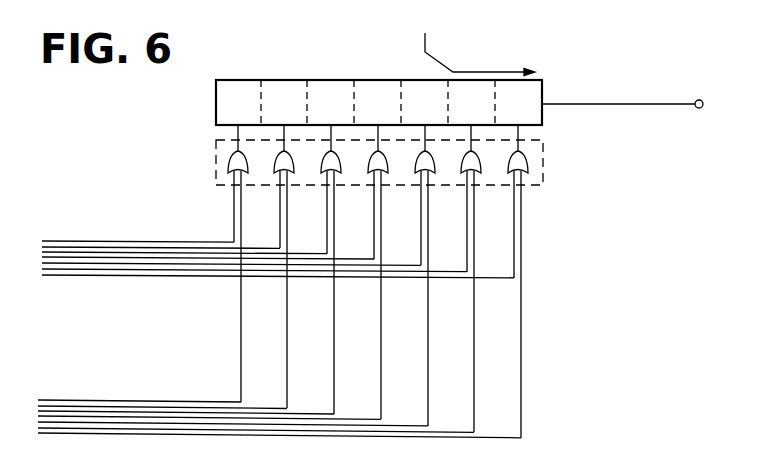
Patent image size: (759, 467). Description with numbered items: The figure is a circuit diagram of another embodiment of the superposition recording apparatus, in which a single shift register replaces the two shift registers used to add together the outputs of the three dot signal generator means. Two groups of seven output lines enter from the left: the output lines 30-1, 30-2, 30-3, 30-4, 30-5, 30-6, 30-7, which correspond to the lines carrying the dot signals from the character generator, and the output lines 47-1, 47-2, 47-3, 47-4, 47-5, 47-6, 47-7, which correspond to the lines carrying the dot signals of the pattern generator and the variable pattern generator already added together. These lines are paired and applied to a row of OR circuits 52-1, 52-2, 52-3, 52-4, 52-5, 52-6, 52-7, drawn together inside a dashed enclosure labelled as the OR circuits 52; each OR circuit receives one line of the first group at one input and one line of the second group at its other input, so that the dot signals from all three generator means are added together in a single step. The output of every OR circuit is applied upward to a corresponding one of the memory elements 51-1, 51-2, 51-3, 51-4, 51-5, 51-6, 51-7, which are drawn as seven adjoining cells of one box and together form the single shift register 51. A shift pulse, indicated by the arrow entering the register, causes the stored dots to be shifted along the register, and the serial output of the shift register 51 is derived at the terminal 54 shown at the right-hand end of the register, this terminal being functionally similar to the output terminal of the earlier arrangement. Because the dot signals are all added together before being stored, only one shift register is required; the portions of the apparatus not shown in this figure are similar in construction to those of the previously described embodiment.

The shift register 51 is at (207, 107).
The memory element 51-1 is at (237, 80).
The memory element 51-2 is at (284, 80).
The memory element 51-3 is at (331, 80).
The memory element 51-4 is at (378, 80).
The memory element 51-5 is at (424, 80).
The memory element 51-6 is at (471, 80).
The memory element 51-7 is at (518, 80).
The OR circuits 52 is at (607, 175).
The OR circuit 52-1 is at (234, 178).
The OR circuit 52-2 is at (280, 178).
The OR circuit 52-3 is at (327, 178).
The OR circuit 52-4 is at (374, 178).
The OR circuit 52-5 is at (421, 178).
The OR circuit 52-6 is at (467, 178).
The OR circuit 52-7 is at (514, 178).
The output line 30-1 is at (48, 275).
The output line 30-2 is at (65, 269).
The output line 30-3 is at (82, 263).
The output line 30-4 is at (100, 257).
The output line 30-5 is at (122, 252).
The output line 30-6 is at (148, 247).
The output line 30-7 is at (180, 241).
The output line 47-1 is at (62, 433).
The output line 47-2 is at (72, 428).
The output line 47-3 is at (88, 422).
The output line 47-4 is at (105, 416).
The output line 47-5 is at (125, 411).
The output line 47-6 is at (148, 406).
The output line 47-7 is at (172, 400).
The terminal 54 is at (699, 100).